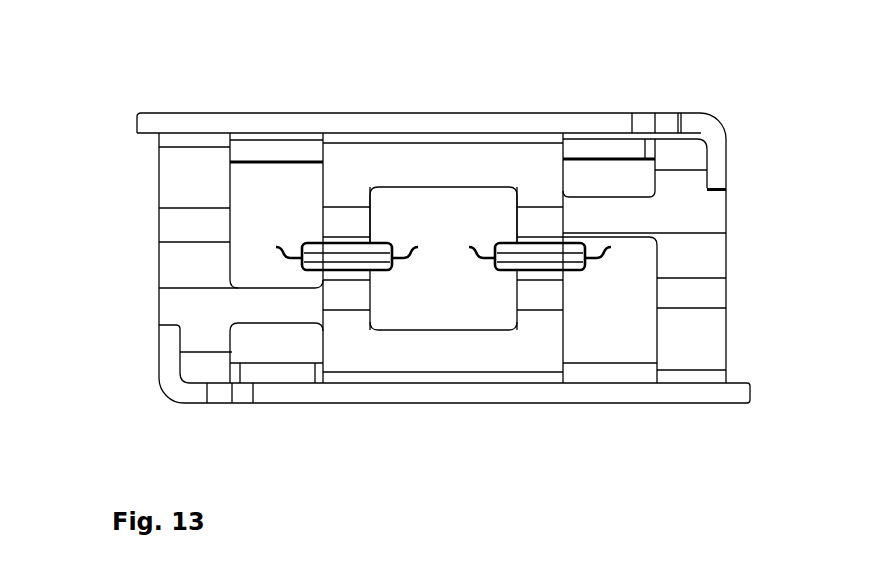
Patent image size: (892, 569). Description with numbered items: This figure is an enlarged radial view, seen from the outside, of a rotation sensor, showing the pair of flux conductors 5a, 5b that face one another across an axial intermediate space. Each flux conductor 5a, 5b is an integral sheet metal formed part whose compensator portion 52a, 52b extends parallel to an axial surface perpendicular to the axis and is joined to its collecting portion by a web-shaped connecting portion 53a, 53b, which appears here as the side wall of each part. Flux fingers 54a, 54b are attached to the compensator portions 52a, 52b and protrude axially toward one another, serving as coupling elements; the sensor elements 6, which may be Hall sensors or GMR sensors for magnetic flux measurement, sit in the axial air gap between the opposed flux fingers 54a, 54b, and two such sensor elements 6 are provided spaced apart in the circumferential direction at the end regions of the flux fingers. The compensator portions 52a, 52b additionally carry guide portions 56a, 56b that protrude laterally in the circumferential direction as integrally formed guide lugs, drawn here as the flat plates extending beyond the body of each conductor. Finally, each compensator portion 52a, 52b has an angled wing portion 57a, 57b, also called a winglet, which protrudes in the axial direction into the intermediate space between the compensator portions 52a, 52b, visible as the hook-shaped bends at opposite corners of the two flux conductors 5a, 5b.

The flux conductor 5a is at (482, 403).
The flux conductor 5b is at (481, 113).
The sensor element 6 is at (345, 262).
The compensator portion 52a is at (417, 385).
The compensator portion 52b is at (418, 121).
The connecting portion 53a is at (172, 270).
The connecting portion 53b is at (710, 265).
The flux finger 54a is at (350, 295).
The flux finger 54b is at (340, 222).
The guide portion 56a is at (740, 392).
The guide portion 56b is at (147, 122).
The wing portion 57a is at (170, 367).
The wing portion 57b is at (715, 167).